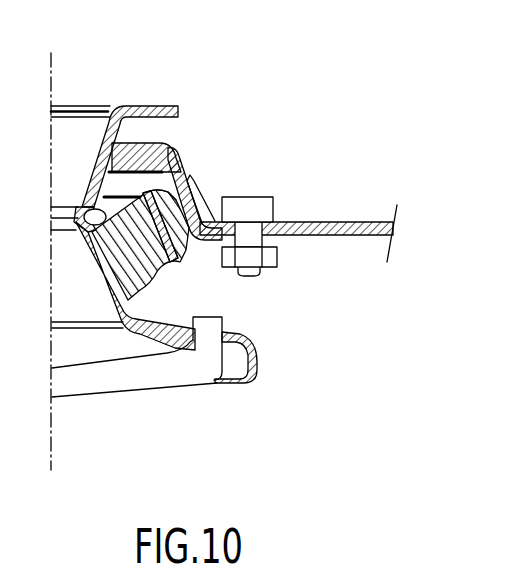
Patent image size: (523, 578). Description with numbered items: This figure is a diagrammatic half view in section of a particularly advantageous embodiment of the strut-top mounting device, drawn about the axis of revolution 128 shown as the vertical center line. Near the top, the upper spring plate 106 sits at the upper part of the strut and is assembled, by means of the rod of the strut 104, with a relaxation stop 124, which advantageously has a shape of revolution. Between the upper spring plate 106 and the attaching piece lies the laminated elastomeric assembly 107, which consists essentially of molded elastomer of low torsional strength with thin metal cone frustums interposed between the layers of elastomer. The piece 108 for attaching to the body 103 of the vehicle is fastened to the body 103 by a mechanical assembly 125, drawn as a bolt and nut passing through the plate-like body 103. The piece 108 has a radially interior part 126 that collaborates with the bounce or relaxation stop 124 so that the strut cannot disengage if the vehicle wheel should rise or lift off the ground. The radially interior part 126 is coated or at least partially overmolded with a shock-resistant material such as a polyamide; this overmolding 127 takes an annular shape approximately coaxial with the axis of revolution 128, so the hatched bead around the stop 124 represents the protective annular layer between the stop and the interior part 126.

The body of the vehicle 103 is at (339, 231).
The strut rod 104 is at (95, 373).
The upper spring plate 106 is at (256, 356).
The laminated elastomeric assembly 107 is at (172, 277).
The piece for attaching to the body 108 is at (280, 243).
The relaxation stop 124 is at (147, 113).
The mechanical assembly 125 is at (258, 208).
The radially interior part 126 is at (181, 164).
The overmolding 127 is at (167, 148).
The axis of revolution 128 is at (51, 72).